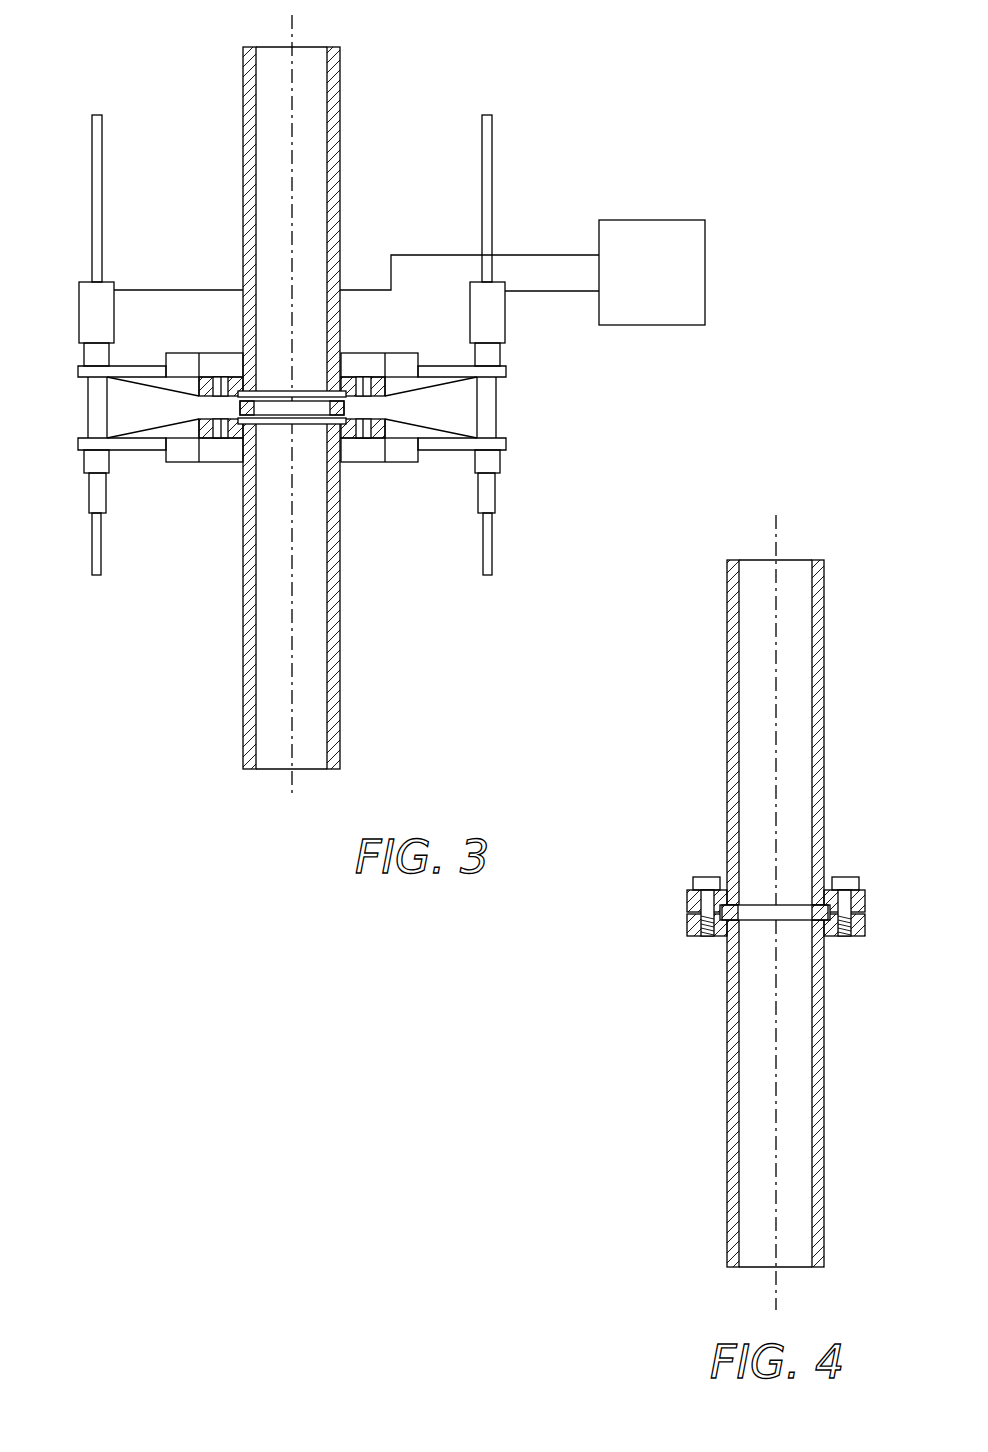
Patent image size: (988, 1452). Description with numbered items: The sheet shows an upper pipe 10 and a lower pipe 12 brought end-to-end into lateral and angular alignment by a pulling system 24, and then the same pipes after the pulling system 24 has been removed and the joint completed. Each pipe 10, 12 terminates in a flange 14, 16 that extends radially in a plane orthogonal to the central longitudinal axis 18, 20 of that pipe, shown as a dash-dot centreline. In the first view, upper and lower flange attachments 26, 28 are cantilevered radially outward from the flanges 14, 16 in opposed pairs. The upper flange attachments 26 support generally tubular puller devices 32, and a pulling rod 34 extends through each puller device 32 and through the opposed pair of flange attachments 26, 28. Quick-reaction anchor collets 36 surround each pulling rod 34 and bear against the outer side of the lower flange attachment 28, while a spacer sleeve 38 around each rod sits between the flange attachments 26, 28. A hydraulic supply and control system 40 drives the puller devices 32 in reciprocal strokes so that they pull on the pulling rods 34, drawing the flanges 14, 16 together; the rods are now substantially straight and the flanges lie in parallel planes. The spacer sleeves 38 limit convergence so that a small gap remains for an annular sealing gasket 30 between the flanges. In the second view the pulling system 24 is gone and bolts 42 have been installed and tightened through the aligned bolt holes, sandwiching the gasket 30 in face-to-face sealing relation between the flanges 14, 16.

In FIG. 3, the upper pipe 10 is at (340, 105).
In FIG. 4, the upper pipe 10 is at (824, 612).
In FIG. 3, the lower pipe 12 is at (243, 707).
In FIG. 4, the lower pipe 12 is at (727, 1202).
In FIG. 3, the upper flange 14 is at (206, 380).
In FIG. 4, the upper flange 14 is at (690, 898).
In FIG. 3, the lower flange 16 is at (375, 442).
In FIG. 4, the lower flange 16 is at (866, 923).
In FIG. 3, the central longitudinal axis 18 is at (292, 27).
In FIG. 4, the central longitudinal axis 18 is at (776, 525).
In FIG. 3, the central longitudinal axis 20 is at (291, 793).
In FIG. 4, the central longitudinal axis 20 is at (776, 1300).
In FIG. 3, the pulling system 24 is at (164, 259).
In FIG. 3, the upper flange attachments 26 is at (177, 352).
In FIG. 3, the lower flange attachments 28 is at (178, 457).
In FIG. 3, the annular sealing gasket 30 is at (267, 410).
In FIG. 4, the annular sealing gasket 30 is at (730, 920).
In FIG. 3, the puller devices 32 is at (79, 290).
In FIG. 3, the pulling rod 34 is at (92, 125).
In FIG. 3, the anchor collets 36 is at (89, 497).
In FIG. 3, the spacer sleeve 38 is at (88, 405).
In FIG. 3, the hydraulic supply and control system 40 is at (683, 220).
In FIG. 4, the bolts 42 is at (703, 875).